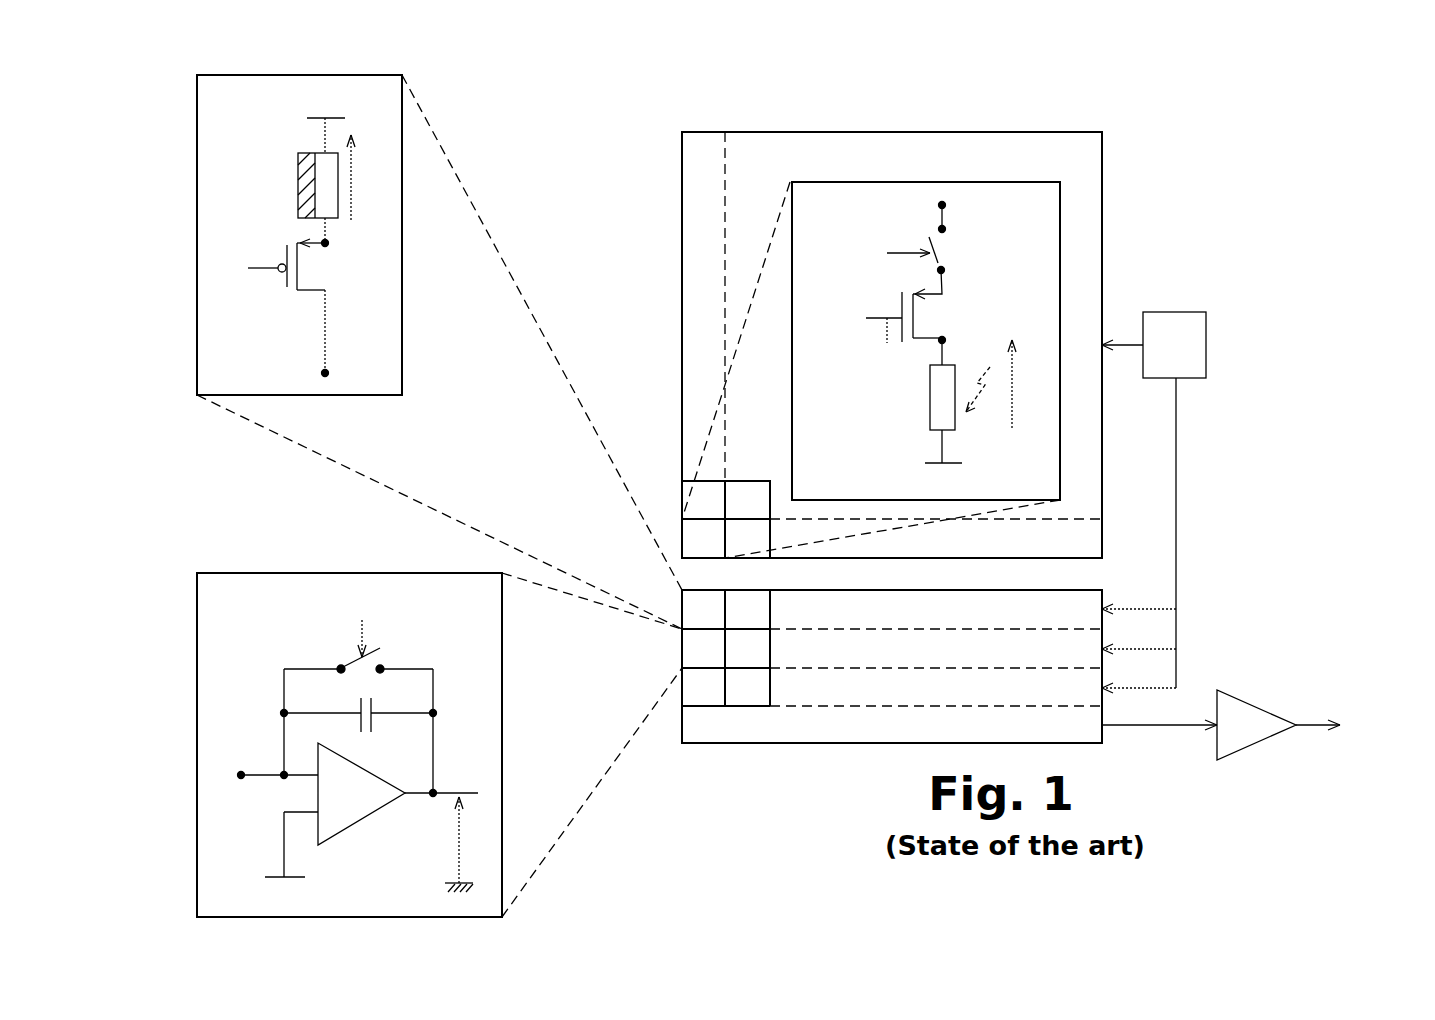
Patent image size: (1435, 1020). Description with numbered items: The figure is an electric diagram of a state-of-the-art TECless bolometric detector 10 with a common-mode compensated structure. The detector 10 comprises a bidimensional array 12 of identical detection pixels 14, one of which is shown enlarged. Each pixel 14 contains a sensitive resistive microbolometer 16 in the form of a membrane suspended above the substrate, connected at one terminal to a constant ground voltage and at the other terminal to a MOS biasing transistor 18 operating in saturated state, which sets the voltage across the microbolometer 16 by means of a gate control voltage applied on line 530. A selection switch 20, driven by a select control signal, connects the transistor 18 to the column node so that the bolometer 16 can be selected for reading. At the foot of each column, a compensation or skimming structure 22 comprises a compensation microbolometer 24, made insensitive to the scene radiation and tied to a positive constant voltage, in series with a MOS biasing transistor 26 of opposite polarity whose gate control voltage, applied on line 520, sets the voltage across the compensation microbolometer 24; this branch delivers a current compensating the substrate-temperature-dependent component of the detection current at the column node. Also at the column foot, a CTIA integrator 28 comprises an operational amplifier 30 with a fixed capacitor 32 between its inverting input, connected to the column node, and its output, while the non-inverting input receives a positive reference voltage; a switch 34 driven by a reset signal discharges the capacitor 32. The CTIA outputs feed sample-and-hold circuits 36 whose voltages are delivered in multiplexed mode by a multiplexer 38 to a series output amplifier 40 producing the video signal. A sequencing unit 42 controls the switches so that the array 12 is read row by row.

The bolometric detector 10 is at (1090, 120).
The bidimensional array 12 is at (1102, 268).
The unit bolometric detection element 14 is at (682, 535).
The sensitive resistive microbolometer 16 is at (944, 388).
The MOS biasing transistor 18 is at (940, 318).
The selection switch 20 is at (945, 240).
The compensation structure 22 is at (197, 125).
The compensation microbolometer 24 is at (322, 190).
The MOS biasing transistor 26 is at (315, 265).
The integrator 28 is at (197, 640).
The operational amplifier 30 is at (348, 811).
The capacitor 32 is at (372, 724).
The switch 34 is at (380, 658).
The sample-and-hold circuit 36 is at (700, 708).
The multiplexer 38 is at (808, 725).
The series output amplifier 40 is at (1243, 733).
The sequencing unit 42 is at (1196, 345).
The GCM gate voltage line 520 is at (262, 266).
The GAC gate voltage line 530 is at (887, 343).